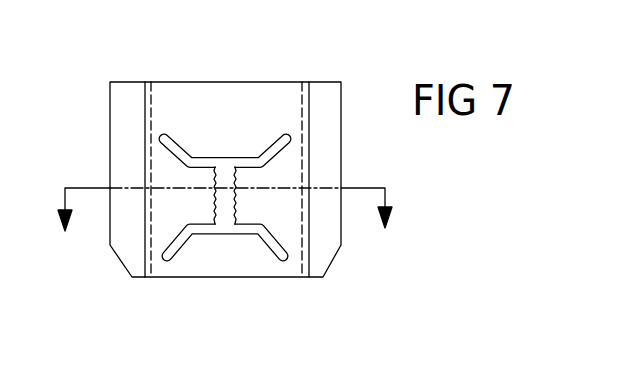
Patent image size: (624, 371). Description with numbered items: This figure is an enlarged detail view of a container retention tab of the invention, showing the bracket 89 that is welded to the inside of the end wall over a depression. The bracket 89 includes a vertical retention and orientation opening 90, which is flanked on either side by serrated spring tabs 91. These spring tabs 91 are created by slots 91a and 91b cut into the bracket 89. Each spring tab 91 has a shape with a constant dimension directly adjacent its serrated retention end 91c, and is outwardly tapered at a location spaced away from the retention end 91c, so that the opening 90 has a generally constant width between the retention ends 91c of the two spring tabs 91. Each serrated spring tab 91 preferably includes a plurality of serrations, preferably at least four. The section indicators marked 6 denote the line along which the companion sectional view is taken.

The bracket 89 is at (290, 82).
The vertical retention and orientation opening 90 is at (235, 179).
The serrated spring tabs 91 is at (228, 189).
The slot 91a is at (290, 142).
The slot 91b is at (166, 259).
The serrated retention ends 91c is at (215, 212).
The section line for FIG. 6 is at (226, 233).